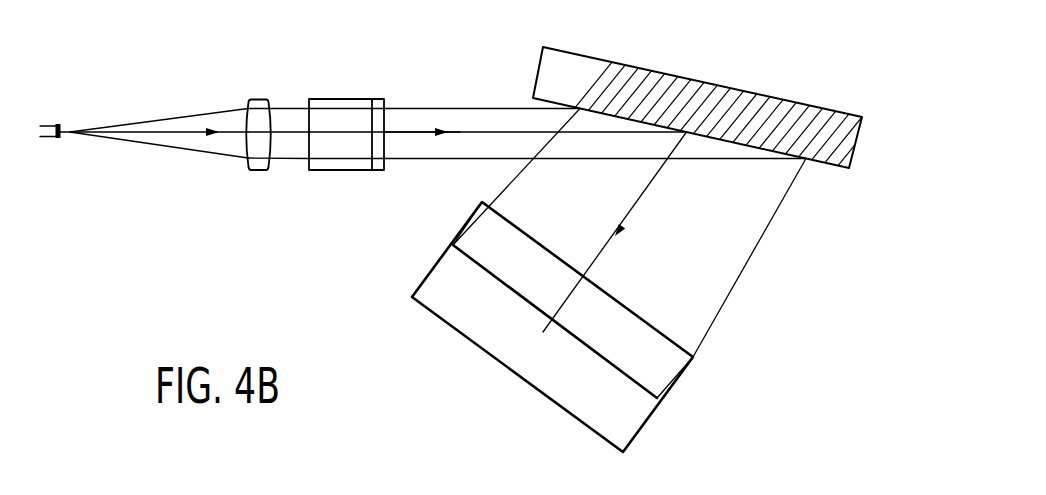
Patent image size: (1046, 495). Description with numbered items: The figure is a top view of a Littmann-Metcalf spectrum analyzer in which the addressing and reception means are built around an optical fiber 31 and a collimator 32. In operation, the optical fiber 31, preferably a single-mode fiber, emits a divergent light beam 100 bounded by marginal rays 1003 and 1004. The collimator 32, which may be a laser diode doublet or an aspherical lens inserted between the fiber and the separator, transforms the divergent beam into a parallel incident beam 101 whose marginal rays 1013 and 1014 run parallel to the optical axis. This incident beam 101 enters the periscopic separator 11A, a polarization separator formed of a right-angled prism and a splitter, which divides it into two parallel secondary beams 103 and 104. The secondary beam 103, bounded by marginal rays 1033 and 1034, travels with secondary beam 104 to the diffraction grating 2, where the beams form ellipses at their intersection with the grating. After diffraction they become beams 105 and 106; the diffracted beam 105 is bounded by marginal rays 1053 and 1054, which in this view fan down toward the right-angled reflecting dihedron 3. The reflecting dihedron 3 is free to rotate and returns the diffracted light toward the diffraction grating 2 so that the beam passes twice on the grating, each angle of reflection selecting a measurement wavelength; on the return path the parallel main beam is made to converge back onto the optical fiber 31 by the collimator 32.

The optical fiber 31 is at (55, 124).
The divergent light beam 100 is at (157, 131).
The marginal ray of beam 100 1003 is at (200, 108).
The marginal ray of beam 100 1004 is at (187, 150).
The collimator 32 is at (257, 98).
The incident beam 101 is at (294, 128).
The marginal ray of incident beam 101 1013 is at (305, 108).
The marginal ray of incident beam 101 1014 is at (275, 158).
The periscopic separator 11A is at (346, 184).
The secondary beam 103 is at (412, 134).
The secondary beam 104 is at (410, 128).
The marginal ray of secondary beam 103 1033 is at (470, 108).
The marginal ray of secondary beam 103 1034 is at (464, 161).
The diffraction grating 2 is at (708, 79).
The marginal ray of beam 105 1053 is at (516, 177).
The diffracted beam 105 is at (645, 232).
The diffracted beam 106 is at (636, 204).
The marginal ray of beam 105 1054 is at (751, 258).
The reflecting dihedron 3 is at (512, 378).